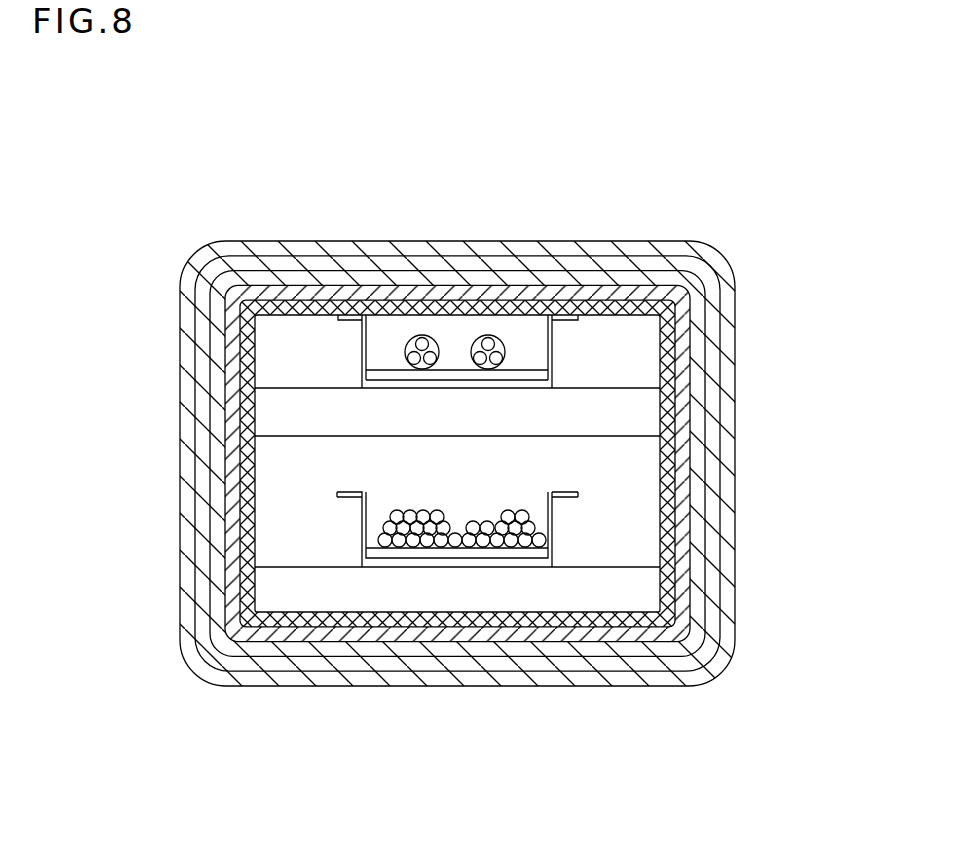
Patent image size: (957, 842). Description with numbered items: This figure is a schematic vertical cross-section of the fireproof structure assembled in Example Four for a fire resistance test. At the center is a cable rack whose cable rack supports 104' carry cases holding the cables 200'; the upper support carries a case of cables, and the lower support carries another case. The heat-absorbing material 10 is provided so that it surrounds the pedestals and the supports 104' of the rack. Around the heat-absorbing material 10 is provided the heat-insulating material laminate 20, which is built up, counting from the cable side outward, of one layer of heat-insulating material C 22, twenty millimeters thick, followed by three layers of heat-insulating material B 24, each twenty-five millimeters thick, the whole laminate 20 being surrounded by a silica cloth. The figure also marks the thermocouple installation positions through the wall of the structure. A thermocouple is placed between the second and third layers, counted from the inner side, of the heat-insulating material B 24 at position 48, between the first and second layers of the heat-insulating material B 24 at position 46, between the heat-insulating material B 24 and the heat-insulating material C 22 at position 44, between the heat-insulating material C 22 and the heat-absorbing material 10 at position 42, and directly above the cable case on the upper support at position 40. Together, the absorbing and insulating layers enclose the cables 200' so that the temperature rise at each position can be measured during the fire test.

The heat-absorbing material 10 is at (540, 387).
The heat-insulating material laminate 20 is at (547, 463).
The heat-insulating material C 22 is at (690, 553).
The heat-insulating material B 24 is at (710, 507).
The thermocouple installation position 40 is at (458, 255).
The thermocouple installation position 42 is at (458, 270).
The thermocouple installation position 44 is at (458, 285).
The thermocouple installation position 46 is at (458, 300).
The thermocouple installation position 48 is at (458, 312).
The cables 200' is at (606, 342).
The cable rack support 104' is at (457, 636).